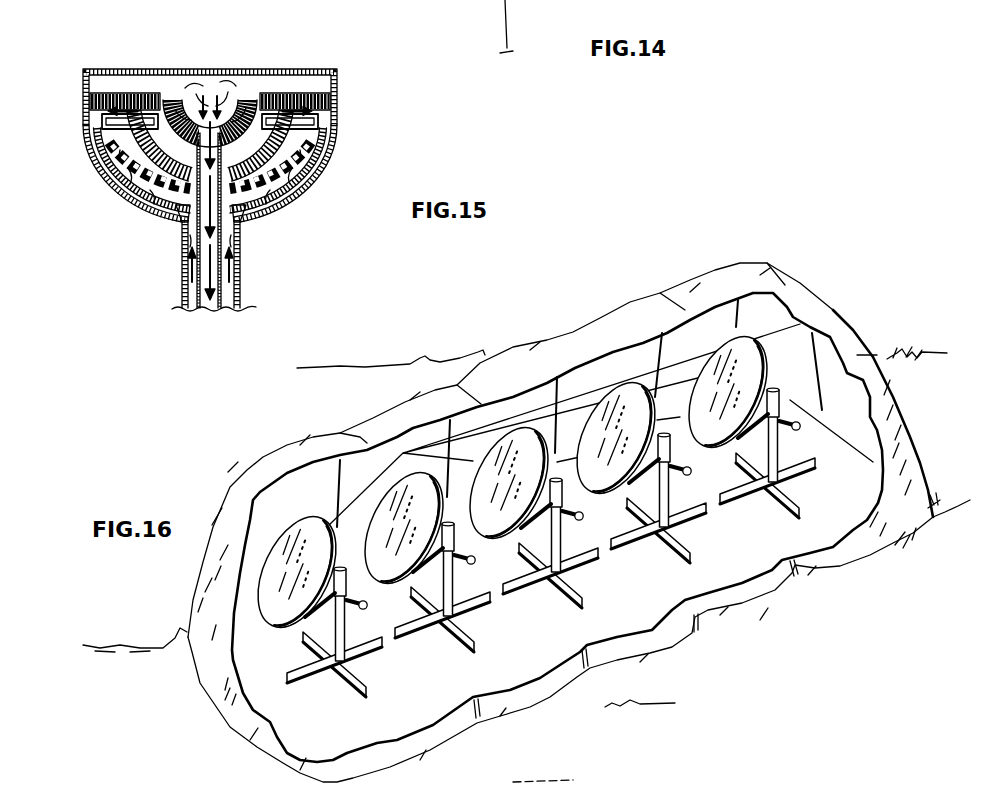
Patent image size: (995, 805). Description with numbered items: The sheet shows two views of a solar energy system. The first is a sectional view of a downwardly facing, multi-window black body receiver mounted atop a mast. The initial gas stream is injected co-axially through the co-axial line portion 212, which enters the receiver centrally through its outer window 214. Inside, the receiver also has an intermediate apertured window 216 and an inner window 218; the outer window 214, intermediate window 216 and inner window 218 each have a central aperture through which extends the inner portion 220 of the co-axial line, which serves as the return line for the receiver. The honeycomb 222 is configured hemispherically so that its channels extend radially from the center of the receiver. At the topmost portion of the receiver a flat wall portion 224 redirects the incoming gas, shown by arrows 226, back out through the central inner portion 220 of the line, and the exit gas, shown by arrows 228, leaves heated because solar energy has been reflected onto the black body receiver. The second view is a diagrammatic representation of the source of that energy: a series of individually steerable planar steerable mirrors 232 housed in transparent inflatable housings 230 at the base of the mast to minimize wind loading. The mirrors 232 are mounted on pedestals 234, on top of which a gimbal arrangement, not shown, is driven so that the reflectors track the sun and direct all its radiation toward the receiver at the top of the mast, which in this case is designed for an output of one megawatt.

In FIG. 15, the co-axial line portion 212 is at (240, 298).
In FIG. 15, the outer window 214 is at (147, 213).
In FIG. 15, the intermediate apertured window 216 is at (123, 163).
In FIG. 15, the inner window 218 is at (107, 121).
In FIG. 15, the inner portion of the co-axial line 220 is at (199, 240).
In FIG. 15, the honeycomb 222 is at (300, 198).
In FIG. 15, the flat wall portion 224 is at (333, 71).
In FIG. 15, the arrows indicating incoming gas 226 is at (220, 92).
In FIG. 15, the arrows indicating exit gas 228 is at (210, 234).
In FIG. 16, the inflatable housings 230 is at (808, 287).
In FIG. 16, the steerable mirrors 232 is at (600, 425).
In FIG. 16, the pedestals 234 is at (815, 510).